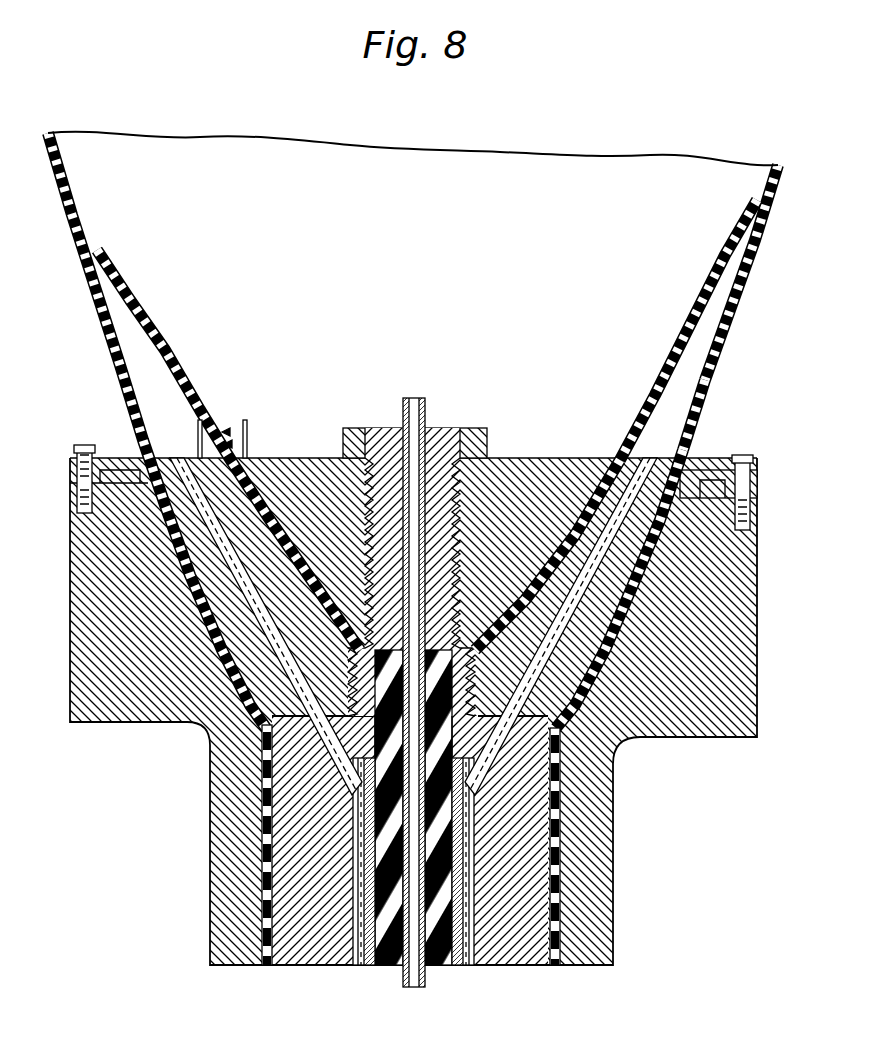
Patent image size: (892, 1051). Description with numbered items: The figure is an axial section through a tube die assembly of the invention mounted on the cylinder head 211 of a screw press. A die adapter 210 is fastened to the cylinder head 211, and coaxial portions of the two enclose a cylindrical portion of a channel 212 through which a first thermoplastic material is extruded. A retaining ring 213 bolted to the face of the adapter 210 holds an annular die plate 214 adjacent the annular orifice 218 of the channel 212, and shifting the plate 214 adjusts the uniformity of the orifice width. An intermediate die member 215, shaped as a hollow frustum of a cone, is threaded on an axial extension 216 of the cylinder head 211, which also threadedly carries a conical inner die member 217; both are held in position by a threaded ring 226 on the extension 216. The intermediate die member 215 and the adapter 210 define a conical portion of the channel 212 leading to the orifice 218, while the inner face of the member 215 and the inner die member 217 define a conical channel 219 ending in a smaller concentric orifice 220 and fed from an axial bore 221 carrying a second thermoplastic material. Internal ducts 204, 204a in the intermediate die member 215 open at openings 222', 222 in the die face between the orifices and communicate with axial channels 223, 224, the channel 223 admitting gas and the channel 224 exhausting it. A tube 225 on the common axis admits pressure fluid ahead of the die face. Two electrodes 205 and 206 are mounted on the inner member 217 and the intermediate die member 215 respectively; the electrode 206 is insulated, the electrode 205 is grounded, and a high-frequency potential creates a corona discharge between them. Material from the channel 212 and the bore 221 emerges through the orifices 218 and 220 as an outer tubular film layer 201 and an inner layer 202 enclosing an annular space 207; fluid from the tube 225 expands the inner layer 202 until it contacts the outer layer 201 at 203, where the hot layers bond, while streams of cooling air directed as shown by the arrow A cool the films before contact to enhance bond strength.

The outer tubular film layer 201 is at (712, 369).
The inner tubular film layer 202 is at (650, 356).
The contact point of layers 203 is at (742, 268).
The cooling air stream arrow A is at (742, 292).
The internal duct 204 is at (583, 597).
The internal duct 204a is at (245, 590).
The electrode 205 is at (248, 422).
The electrode 206 is at (170, 449).
The annular space 207 is at (692, 377).
The die adapter 210 is at (214, 930).
The cylinder head 211 is at (282, 966).
The channel 212 is at (560, 935).
The retaining ring 213 is at (758, 490).
The annular die plate 214 is at (705, 500).
The intermediate die member 215 is at (625, 478).
The axial extension 216 is at (440, 440).
The inner die member 217 is at (506, 466).
The annular orifice 218 is at (128, 452).
The conically shaped channel 219 is at (283, 545).
The orifice 220 is at (588, 478).
The axial bore 221 is at (455, 966).
The opening 222 is at (160, 549).
The opening 222' is at (652, 692).
The gas-admitting channel 223 is at (472, 966).
The exhaust channel 224 is at (356, 966).
The tube 225 is at (413, 988).
The threaded ring 226 is at (355, 428).